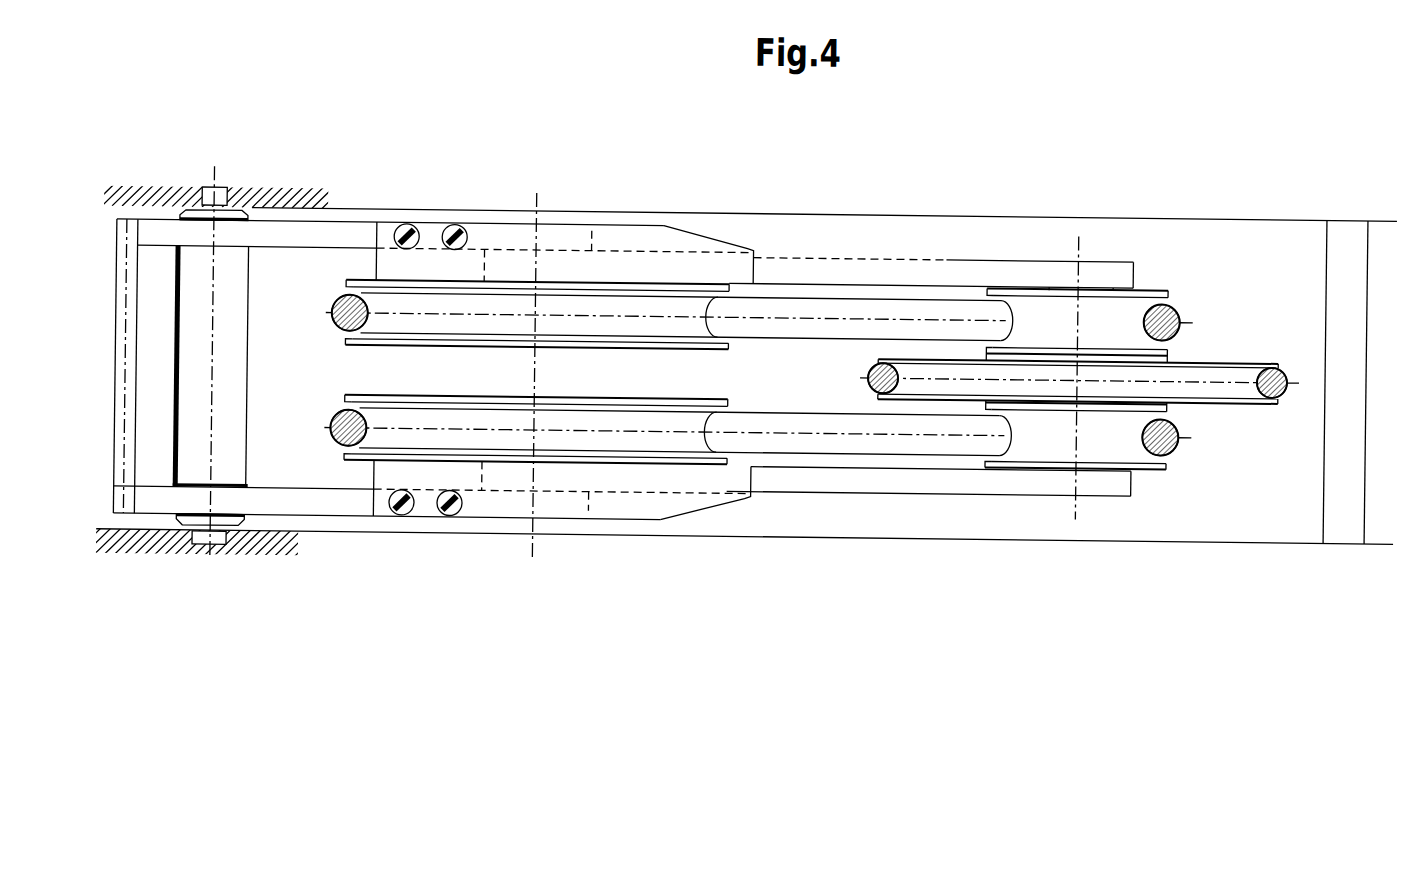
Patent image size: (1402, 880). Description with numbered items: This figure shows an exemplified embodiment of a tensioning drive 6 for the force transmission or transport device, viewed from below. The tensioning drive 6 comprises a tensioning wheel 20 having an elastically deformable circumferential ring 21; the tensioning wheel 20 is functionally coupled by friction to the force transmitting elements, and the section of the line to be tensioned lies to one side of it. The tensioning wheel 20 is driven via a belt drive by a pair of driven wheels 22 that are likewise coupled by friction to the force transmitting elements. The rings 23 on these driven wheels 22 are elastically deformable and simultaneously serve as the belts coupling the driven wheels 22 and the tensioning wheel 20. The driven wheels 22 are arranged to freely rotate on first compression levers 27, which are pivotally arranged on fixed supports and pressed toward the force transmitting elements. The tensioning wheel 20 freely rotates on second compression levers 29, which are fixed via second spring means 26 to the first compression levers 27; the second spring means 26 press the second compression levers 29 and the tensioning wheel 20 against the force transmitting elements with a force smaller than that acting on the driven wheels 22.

The tensioning drive 6 is at (516, 552).
The tensioning wheel 20 is at (1225, 405).
The elastically deformable circumferential ring 21 is at (1284, 368).
The driven wheels 22 is at (381, 306).
The rings 23 is at (857, 303).
The second spring means 26 is at (658, 237).
The first compression levers 27 is at (294, 230).
The second compression levers 29 is at (964, 262).